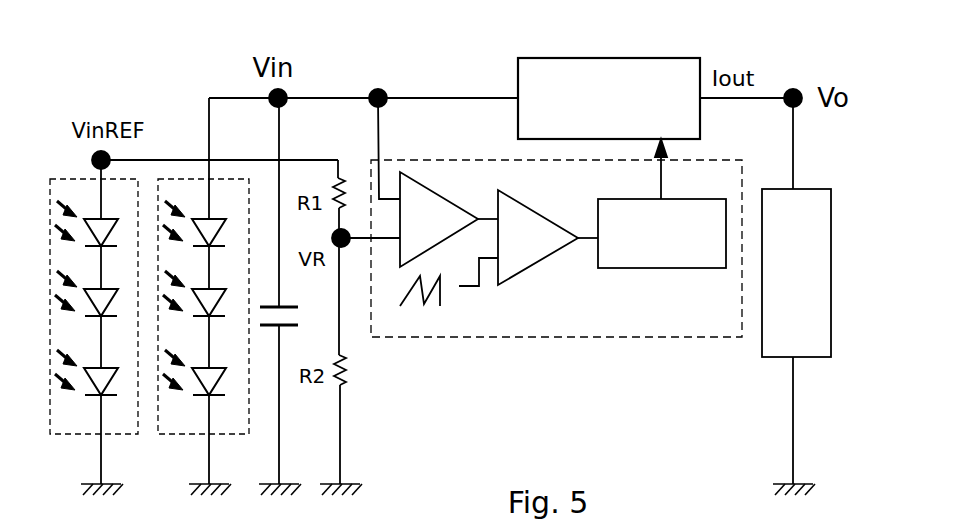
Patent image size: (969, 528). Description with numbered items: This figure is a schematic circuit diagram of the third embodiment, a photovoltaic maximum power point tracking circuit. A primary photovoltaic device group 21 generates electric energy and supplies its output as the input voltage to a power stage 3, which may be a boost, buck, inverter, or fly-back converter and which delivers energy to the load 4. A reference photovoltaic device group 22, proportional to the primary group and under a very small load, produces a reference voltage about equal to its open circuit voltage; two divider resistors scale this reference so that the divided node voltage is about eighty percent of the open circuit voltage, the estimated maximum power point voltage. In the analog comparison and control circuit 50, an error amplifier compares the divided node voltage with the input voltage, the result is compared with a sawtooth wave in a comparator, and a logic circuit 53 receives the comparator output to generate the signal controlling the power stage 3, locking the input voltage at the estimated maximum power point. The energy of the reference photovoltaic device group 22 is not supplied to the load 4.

The power stage 3 is at (672, 58).
The load 4 is at (810, 357).
The primary photovoltaic device group 21 is at (202, 179).
The reference photovoltaic device group 22 is at (120, 434).
The analog comparison and control circuit 50 is at (556, 251).
The logic circuit 53 is at (658, 267).